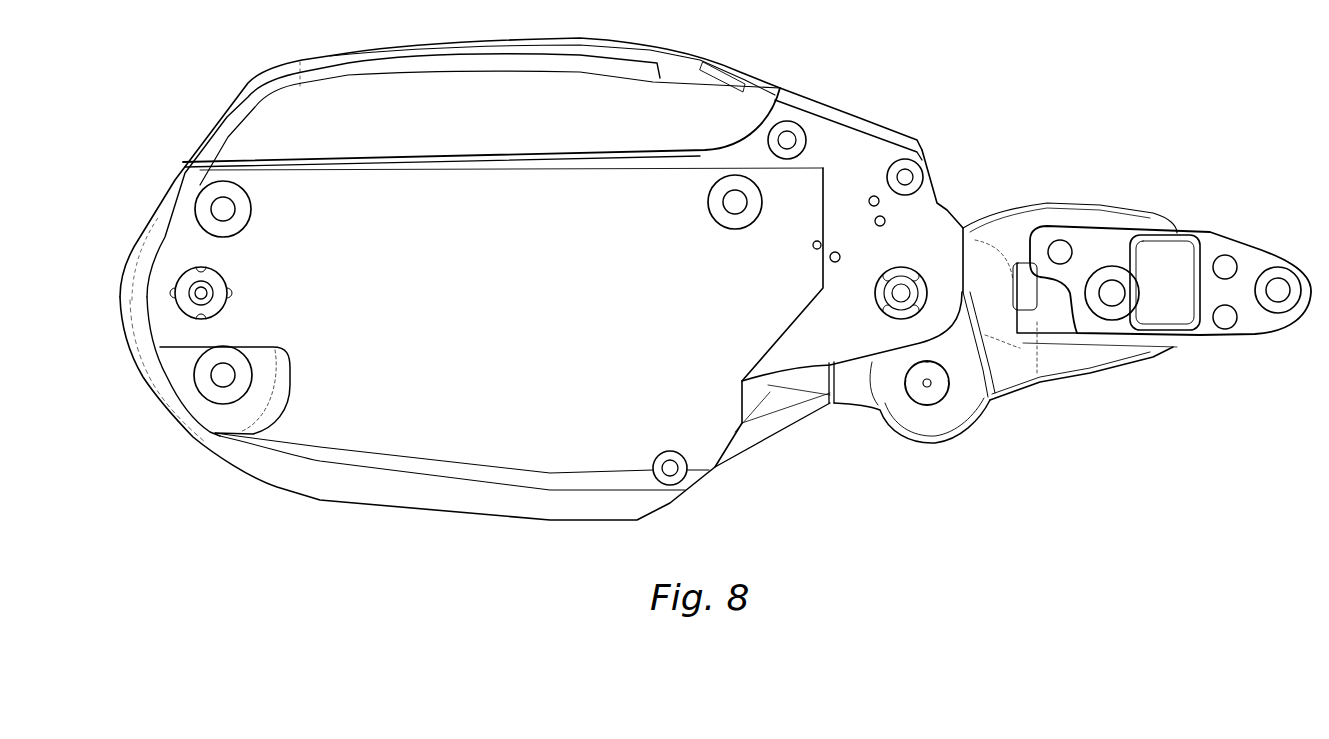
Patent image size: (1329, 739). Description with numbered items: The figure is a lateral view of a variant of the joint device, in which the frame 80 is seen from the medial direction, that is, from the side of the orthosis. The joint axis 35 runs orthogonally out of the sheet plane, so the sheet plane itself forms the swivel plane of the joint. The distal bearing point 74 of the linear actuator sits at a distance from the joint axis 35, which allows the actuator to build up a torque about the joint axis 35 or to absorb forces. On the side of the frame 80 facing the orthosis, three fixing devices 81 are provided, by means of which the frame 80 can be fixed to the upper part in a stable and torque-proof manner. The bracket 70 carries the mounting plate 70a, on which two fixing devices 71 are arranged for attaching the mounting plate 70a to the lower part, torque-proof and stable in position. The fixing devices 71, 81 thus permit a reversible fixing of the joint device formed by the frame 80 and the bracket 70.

The joint axis 35 is at (903, 292).
The bracket 70 is at (1067, 190).
The mounting plate 70a is at (1212, 240).
The fixing devices 71 is at (1112, 287).
The distal bearing point 74 is at (927, 385).
The frame 80 is at (800, 178).
The fixing devices 81 is at (217, 205).